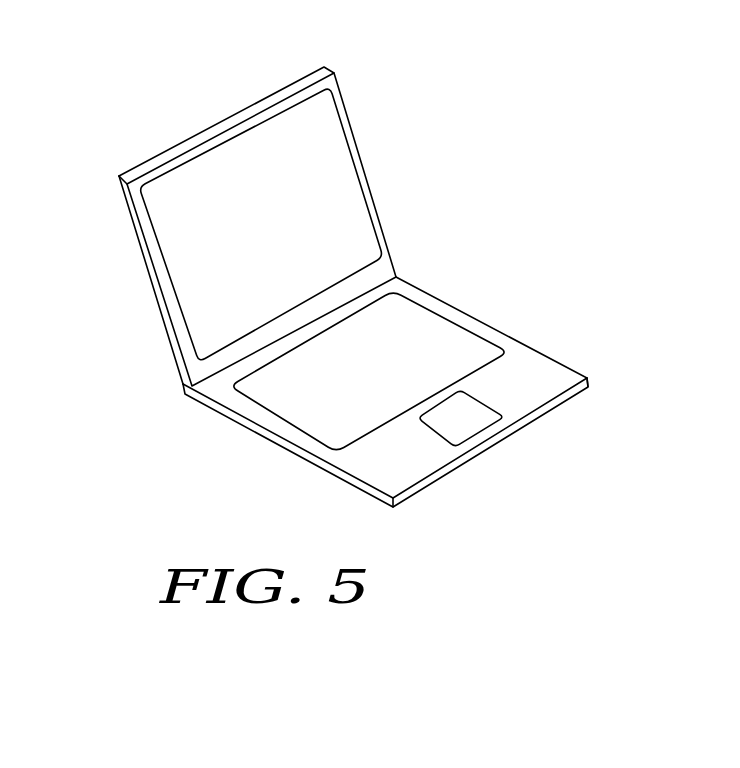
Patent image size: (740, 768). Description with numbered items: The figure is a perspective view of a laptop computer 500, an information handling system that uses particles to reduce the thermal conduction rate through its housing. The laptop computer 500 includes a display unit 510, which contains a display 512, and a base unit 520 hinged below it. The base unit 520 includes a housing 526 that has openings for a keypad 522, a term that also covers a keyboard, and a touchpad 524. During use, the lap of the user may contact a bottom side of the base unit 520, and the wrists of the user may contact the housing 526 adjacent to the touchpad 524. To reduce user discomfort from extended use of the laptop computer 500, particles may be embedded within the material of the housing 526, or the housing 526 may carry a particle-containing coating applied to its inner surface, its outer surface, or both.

The laptop computer 500 is at (131, 71).
The display unit 510 is at (334, 72).
The display 512 is at (261, 224).
The base unit 520 is at (188, 469).
The keypad 522 is at (369, 371).
The touchpad 524 is at (461, 418).
The housing 526 is at (578, 372).